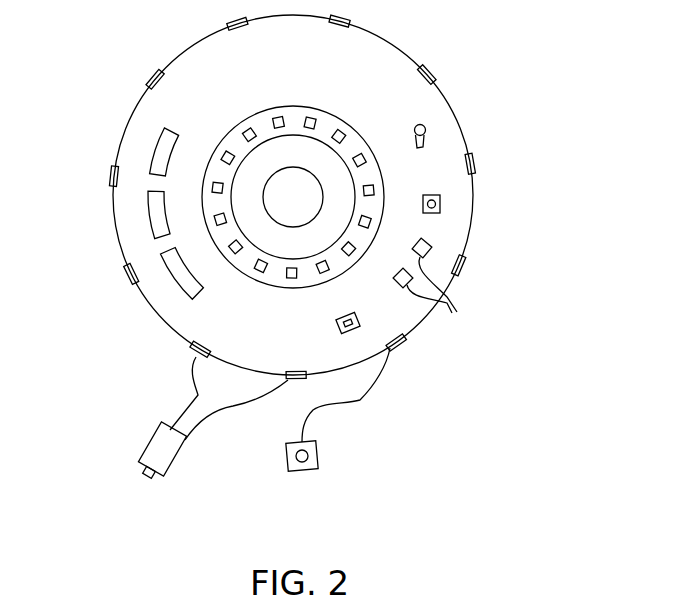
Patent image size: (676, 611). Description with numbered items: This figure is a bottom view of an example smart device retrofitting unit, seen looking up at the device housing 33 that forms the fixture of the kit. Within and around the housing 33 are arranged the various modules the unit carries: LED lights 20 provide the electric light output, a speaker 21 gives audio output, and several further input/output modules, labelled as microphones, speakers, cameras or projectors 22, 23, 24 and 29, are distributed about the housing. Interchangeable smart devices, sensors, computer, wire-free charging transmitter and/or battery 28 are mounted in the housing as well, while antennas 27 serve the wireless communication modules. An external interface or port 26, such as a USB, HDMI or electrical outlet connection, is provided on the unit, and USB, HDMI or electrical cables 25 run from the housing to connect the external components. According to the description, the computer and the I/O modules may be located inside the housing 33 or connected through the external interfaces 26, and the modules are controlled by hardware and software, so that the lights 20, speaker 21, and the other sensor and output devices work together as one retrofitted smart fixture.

The LED lights 20 is at (350, 251).
The speaker 21 is at (302, 186).
The microphone, speaker, camera, or projector 22 is at (441, 205).
The microphone, speaker, camera, or projector 23 is at (425, 135).
The microphone, speaker, camera, or projector 24 is at (318, 453).
The USB, HDMI, electrical cables 25 is at (302, 410).
The external interface and/or port 26 is at (318, 387).
The antennas for wireless modules 27 is at (142, 233).
The interchangeable smart devices, sensors, computer, wire-free charging transmitter 28 is at (276, 332).
The microphone, speaker, camera, or projector 29 is at (181, 462).
The device housing or device fixture 33 is at (344, 99).